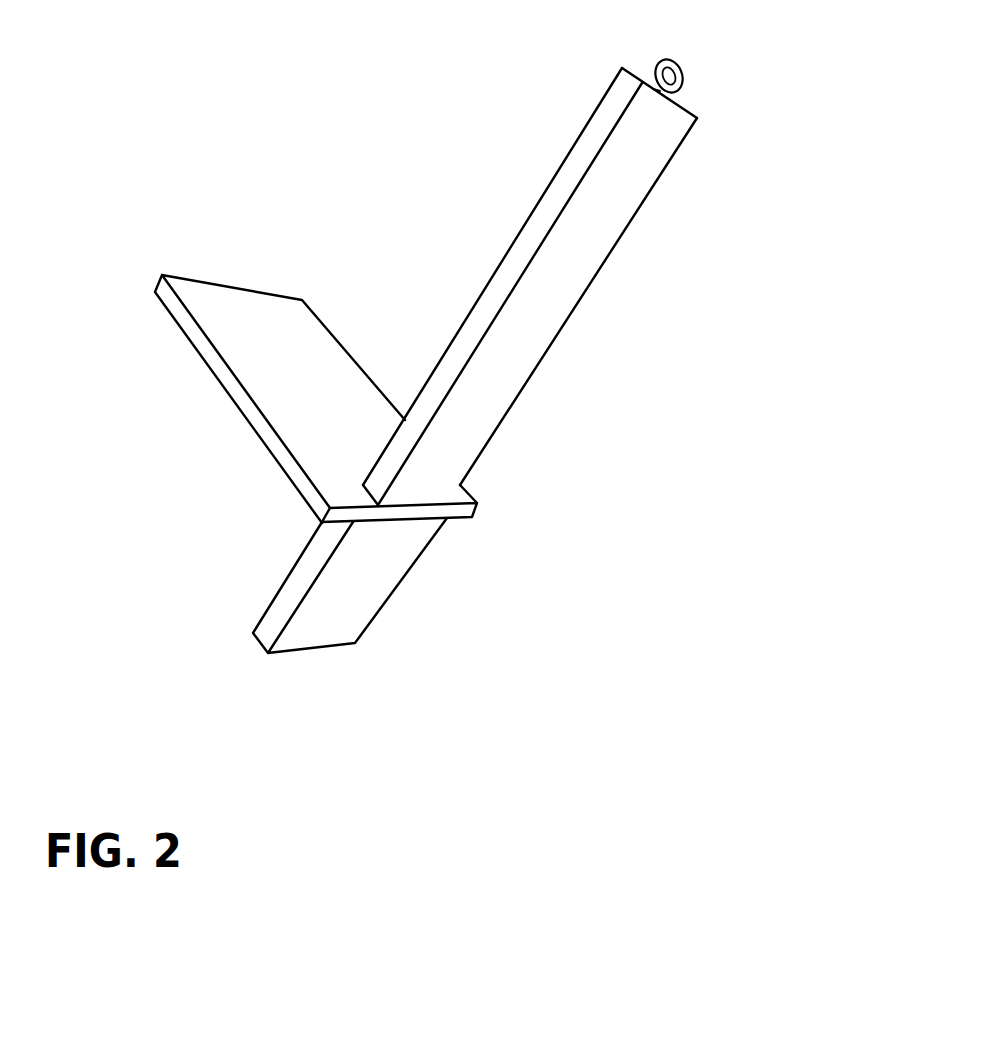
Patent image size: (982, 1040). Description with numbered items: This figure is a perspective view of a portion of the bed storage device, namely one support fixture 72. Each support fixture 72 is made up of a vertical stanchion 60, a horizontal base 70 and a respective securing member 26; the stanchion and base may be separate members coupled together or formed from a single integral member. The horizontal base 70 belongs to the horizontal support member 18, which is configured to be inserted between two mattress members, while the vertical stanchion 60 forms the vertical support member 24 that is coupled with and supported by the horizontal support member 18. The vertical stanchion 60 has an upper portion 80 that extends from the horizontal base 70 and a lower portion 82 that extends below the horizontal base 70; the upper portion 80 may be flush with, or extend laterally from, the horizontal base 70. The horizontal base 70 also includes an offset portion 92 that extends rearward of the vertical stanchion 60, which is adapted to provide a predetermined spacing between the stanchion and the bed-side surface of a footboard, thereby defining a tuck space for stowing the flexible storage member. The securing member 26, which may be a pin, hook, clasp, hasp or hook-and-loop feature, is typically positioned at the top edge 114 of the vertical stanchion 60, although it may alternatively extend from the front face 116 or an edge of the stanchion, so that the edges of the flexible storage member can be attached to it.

The horizontal support member 18 is at (183, 336).
The vertical support member 24 is at (625, 243).
The securing member 26 is at (692, 75).
The vertical stanchion 60 is at (525, 357).
The horizontal base 70 is at (240, 398).
The support fixture 72 is at (530, 415).
The upper portion 80 is at (642, 148).
The lower portion 82 is at (300, 585).
The offset portion 92 is at (422, 512).
The top edge 114 is at (683, 104).
The front face 116 is at (560, 282).